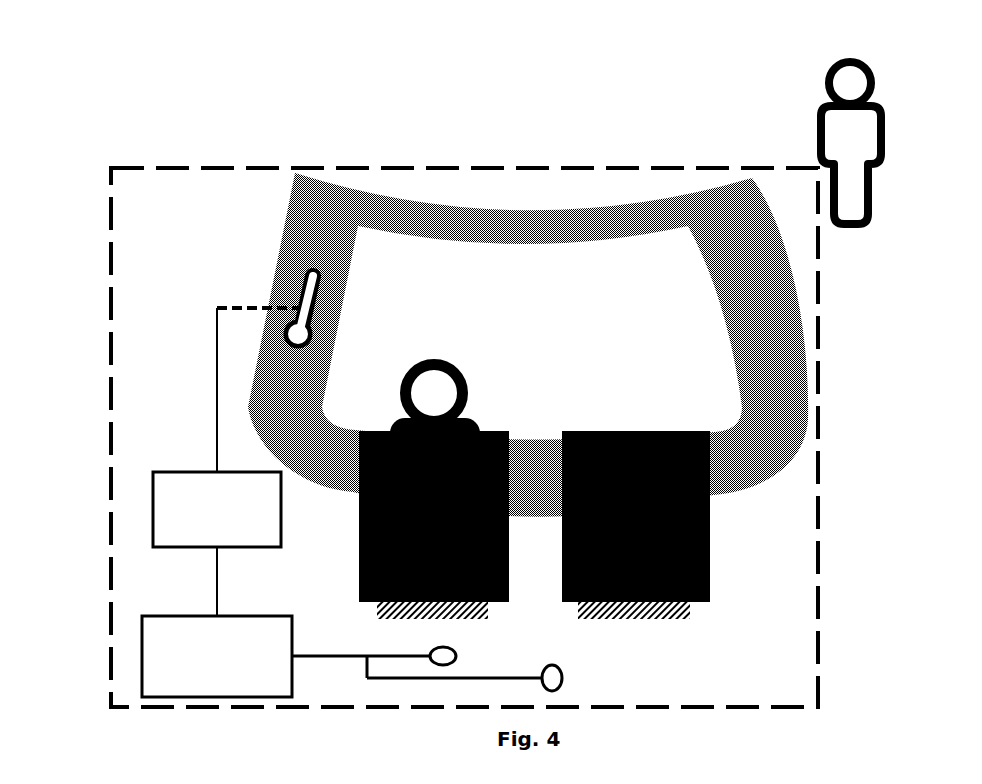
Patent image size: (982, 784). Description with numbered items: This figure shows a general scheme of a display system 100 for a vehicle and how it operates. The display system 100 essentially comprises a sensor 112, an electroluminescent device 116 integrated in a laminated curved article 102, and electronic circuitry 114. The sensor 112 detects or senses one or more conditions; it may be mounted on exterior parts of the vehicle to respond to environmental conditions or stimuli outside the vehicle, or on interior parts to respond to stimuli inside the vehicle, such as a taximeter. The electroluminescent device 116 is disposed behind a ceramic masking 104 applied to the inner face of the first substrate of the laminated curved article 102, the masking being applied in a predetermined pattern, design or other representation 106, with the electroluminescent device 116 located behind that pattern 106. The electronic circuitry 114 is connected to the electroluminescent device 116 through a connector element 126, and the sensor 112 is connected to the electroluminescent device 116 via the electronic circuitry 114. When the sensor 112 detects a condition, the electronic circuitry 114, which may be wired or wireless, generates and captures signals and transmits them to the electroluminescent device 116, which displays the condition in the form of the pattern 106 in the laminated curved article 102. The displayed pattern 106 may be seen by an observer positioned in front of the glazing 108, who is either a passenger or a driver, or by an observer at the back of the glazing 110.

The display system 100 is at (500, 138).
The laminated curved article 102 is at (296, 187).
The ceramic masking 104 is at (780, 333).
The predetermined pattern, design or other representation 106 is at (302, 278).
The observer positioned in front of the glazing 108 is at (470, 390).
The observer positioned at back of the glazing 110 is at (817, 138).
The sensor 112 is at (142, 655).
The electronic circuitry 114 is at (153, 508).
The electroluminescent device 116 is at (287, 330).
The connector element 126 is at (243, 307).